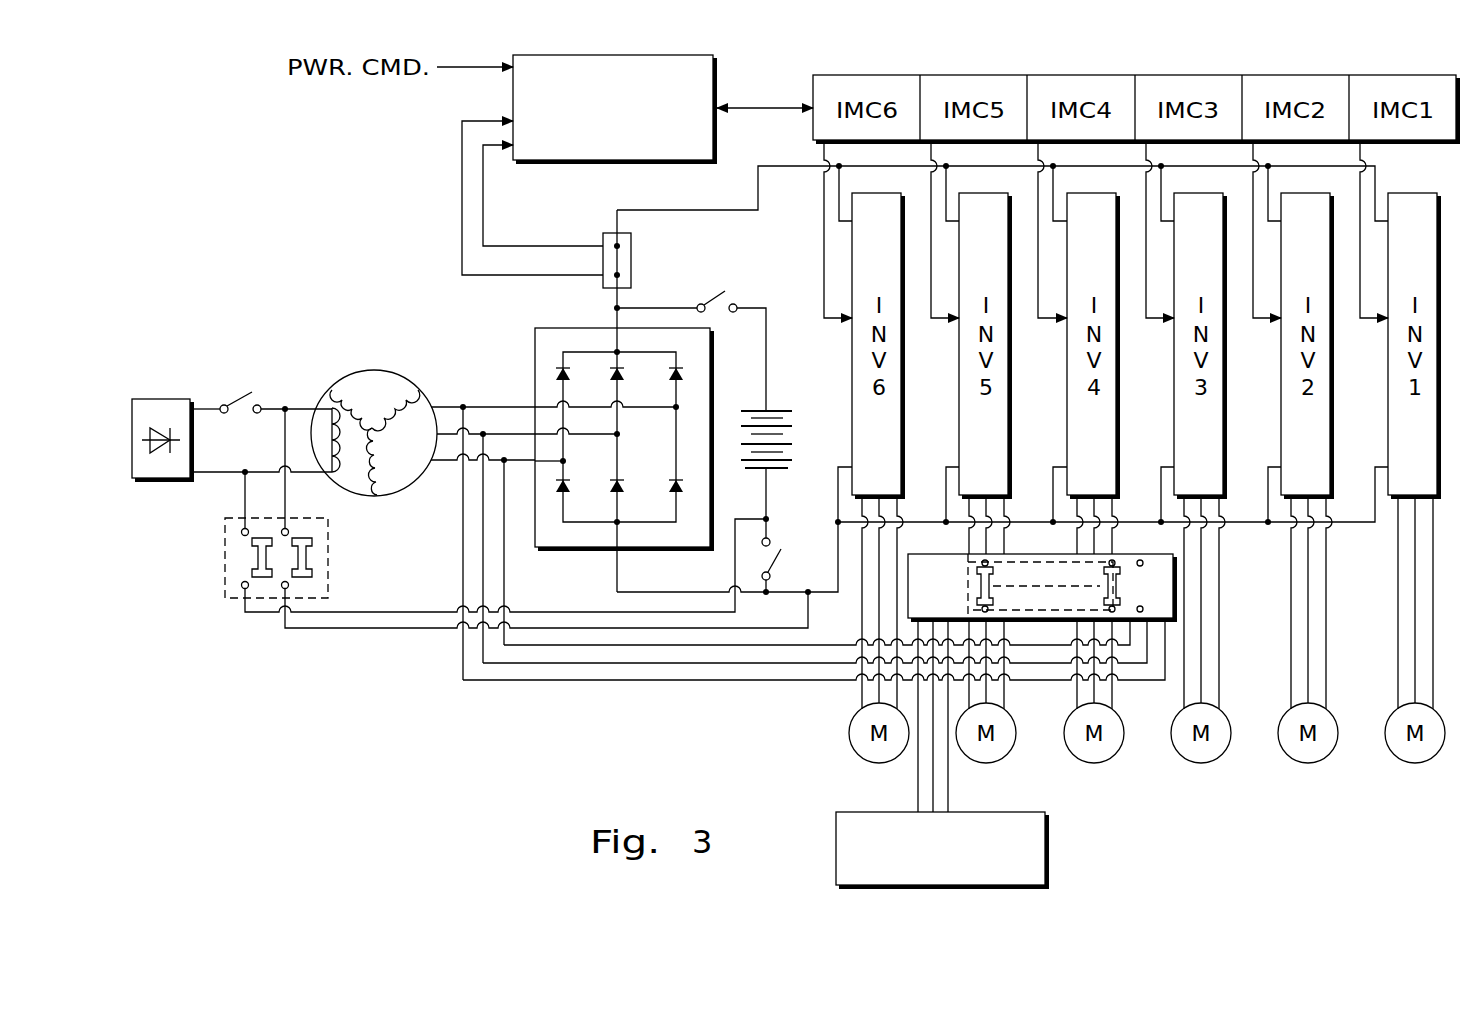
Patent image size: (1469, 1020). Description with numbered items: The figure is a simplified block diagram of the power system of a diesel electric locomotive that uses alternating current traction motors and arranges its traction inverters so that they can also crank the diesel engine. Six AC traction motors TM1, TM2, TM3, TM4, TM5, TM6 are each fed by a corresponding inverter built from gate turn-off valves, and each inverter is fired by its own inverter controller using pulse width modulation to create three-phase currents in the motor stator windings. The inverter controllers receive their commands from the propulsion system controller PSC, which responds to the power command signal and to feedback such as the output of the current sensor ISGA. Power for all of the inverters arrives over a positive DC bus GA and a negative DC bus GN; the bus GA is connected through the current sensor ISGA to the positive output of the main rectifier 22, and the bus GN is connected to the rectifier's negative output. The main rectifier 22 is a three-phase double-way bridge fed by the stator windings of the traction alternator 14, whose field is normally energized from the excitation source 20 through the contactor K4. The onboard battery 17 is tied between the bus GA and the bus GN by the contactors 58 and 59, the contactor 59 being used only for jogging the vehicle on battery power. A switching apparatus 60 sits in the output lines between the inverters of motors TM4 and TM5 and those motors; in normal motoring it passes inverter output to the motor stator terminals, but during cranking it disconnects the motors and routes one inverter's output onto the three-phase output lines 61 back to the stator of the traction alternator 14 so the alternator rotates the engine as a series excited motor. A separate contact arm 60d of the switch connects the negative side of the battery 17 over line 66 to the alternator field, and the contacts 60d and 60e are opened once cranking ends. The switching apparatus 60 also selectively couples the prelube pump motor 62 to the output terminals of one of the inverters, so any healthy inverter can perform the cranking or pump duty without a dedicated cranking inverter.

The traction alternator 14 is at (393, 369).
The battery 17 is at (783, 410).
The excitation source 20 is at (146, 398).
The main rectifier 22 is at (554, 324).
The battery switch (contactor) 58 is at (724, 298).
The battery switch (contactor) 59 is at (776, 562).
The switching apparatus 60 is at (672, 570).
The contact arm 60d is at (252, 558).
The contact 60e is at (312, 557).
The 3-phase output lines 61 is at (657, 638).
The prelube pump motor 62 is at (1047, 848).
The line 66 is at (439, 612).
The contactor K4 is at (227, 396).
The propulsion system controller PSC is at (724, 80).
The current sensor ISGA is at (633, 253).
The positive DC bus GA is at (721, 212).
The negative DC bus GN is at (568, 610).
The AC traction motor TM1 is at (1436, 757).
The AC traction motor TM2 is at (1329, 757).
The AC traction motor TM3 is at (1222, 757).
The AC traction motor TM4 is at (1115, 757).
The AC traction motor TM5 is at (1007, 757).
The AC traction motor TM6 is at (858, 757).